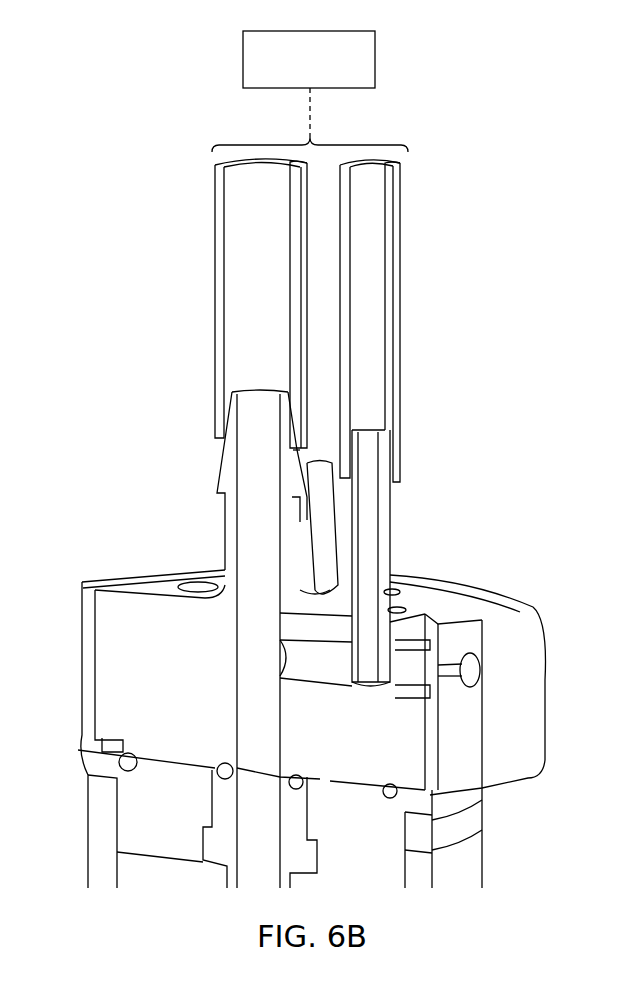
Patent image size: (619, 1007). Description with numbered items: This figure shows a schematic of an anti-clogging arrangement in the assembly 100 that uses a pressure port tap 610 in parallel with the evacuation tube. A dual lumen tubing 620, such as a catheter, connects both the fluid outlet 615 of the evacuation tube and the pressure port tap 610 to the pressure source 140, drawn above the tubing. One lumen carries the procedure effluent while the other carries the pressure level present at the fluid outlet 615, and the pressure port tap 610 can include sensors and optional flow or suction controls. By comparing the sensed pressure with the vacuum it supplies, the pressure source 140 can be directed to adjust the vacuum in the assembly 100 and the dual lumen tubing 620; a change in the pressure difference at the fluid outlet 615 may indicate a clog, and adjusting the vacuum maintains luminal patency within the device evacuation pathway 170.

The assembly 100 is at (324, 695).
The pressure source 140 is at (376, 55).
The device evacuation pathway 170 is at (165, 518).
The pressure port tap 610 is at (390, 512).
The fluid outlet 615 is at (252, 452).
The dual lumen tubing 620 is at (258, 143).